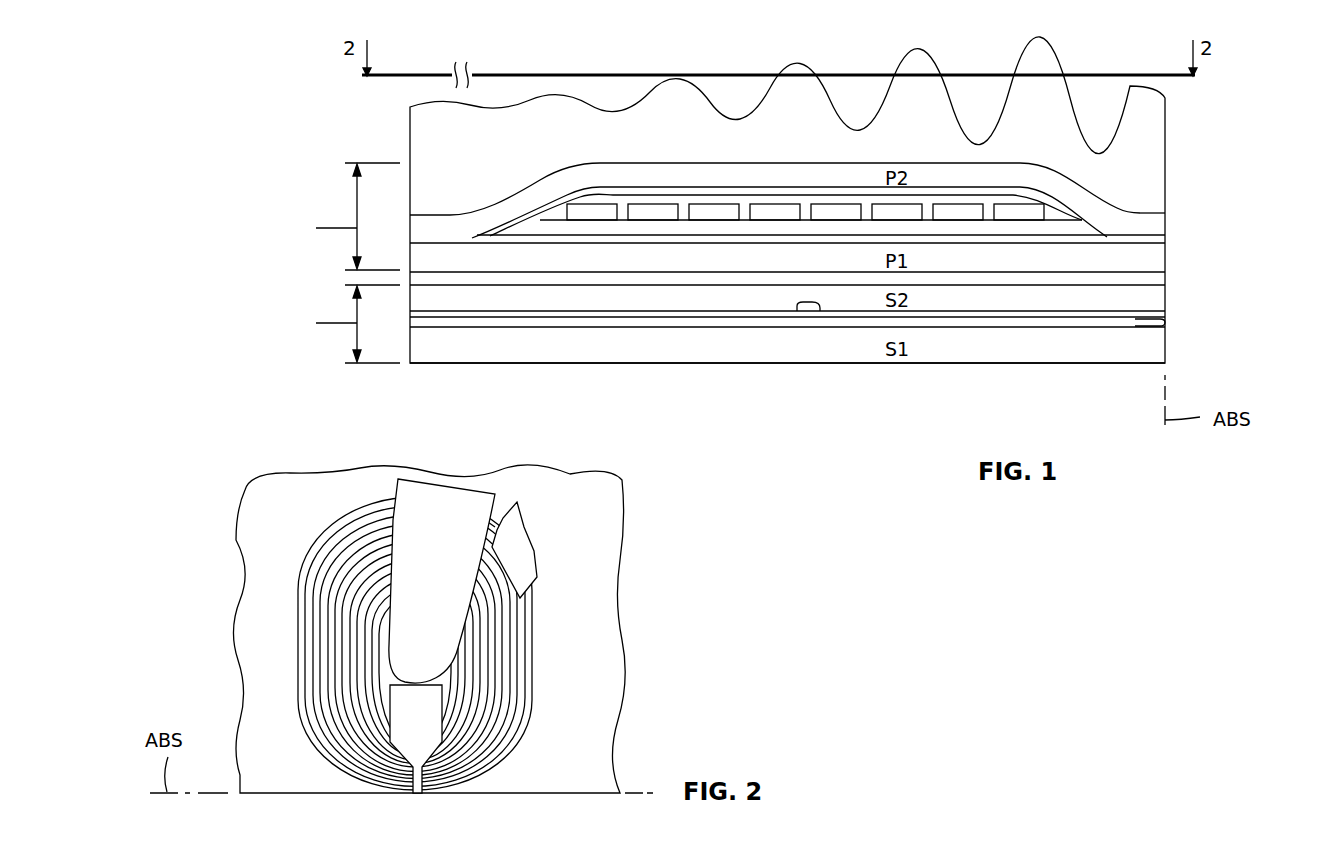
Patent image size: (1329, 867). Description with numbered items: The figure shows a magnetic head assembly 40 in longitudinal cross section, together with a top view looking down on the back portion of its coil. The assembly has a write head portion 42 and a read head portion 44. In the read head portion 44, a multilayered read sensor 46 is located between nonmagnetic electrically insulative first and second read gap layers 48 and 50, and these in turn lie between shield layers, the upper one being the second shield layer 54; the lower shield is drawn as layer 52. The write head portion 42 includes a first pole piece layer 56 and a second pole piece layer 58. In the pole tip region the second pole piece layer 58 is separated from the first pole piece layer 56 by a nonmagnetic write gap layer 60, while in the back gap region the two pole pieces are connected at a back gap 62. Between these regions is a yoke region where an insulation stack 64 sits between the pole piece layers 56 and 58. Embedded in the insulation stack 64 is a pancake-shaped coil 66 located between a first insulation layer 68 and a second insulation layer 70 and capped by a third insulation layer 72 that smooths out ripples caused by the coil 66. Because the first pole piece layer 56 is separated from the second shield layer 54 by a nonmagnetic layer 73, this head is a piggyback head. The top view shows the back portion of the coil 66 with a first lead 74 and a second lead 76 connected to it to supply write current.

In FIG. 1, the magnetic head assembly 40 is at (1218, 152).
In FIG. 2, the magnetic head assembly 40 is at (655, 544).
In FIG. 1, the write head portion 42 is at (305, 216).
In FIG. 1, the read head portion 44 is at (305, 324).
In FIG. 1, the read sensor 46 is at (1168, 323).
In FIG. 1, the first read gap layer 48 is at (848, 328).
In FIG. 1, the second read gap layer 50 is at (798, 311).
In FIG. 1, the first shield layer S1 52 is at (950, 352).
In FIG. 1, the second shield layer 54 is at (997, 302).
In FIG. 1, the first pole piece layer 56 is at (1090, 258).
In FIG. 1, the second pole piece layer 58 is at (738, 172).
In FIG. 2, the second pole piece layer 58 is at (432, 724).
In FIG. 1, the write gap layer 60 is at (1127, 237).
In FIG. 1, the back gap 62 is at (447, 243).
In FIG. 1, the insulation stack 64 is at (962, 176).
In FIG. 1, the coil 66 is at (822, 206).
In FIG. 2, the coil 66 is at (508, 705).
In FIG. 1, the first insulation layer 68 is at (747, 228).
In FIG. 1, the second insulation layer 70 is at (684, 203).
In FIG. 1, the third insulation layer 72 is at (636, 195).
In FIG. 1, the nonmagnetic layer 73 is at (1043, 283).
In FIG. 2, the first lead 74 is at (440, 569).
In FIG. 2, the second lead 76 is at (517, 532).